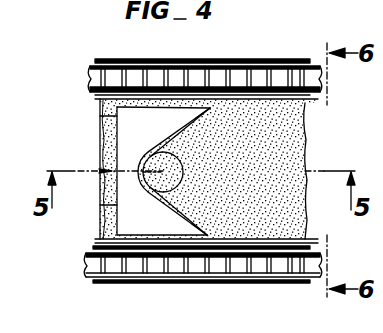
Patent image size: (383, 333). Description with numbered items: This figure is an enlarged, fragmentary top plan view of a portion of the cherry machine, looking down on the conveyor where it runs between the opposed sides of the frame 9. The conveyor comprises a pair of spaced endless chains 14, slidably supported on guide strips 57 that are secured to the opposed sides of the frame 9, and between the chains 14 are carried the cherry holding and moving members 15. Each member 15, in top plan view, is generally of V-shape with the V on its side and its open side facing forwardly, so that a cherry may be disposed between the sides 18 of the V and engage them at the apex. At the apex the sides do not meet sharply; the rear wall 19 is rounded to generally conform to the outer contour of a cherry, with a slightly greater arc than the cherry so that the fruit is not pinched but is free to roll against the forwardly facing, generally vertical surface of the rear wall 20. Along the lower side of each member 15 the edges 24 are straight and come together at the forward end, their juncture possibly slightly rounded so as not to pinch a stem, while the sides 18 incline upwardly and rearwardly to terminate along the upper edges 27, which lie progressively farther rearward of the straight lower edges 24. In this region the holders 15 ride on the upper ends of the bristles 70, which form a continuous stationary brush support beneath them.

The frame 9 is at (179, 69).
The endless chains 14 is at (102, 78).
The guide strips 57 is at (88, 85).
The bristles 70 is at (285, 150).
The cherry holding and moving member 15 is at (118, 128).
The rear wall 19 is at (117, 206).
The rear wall 20 is at (107, 171).
The upper edges 27 is at (160, 149).
The sides 18 is at (178, 135).
The edges 24 is at (200, 118).